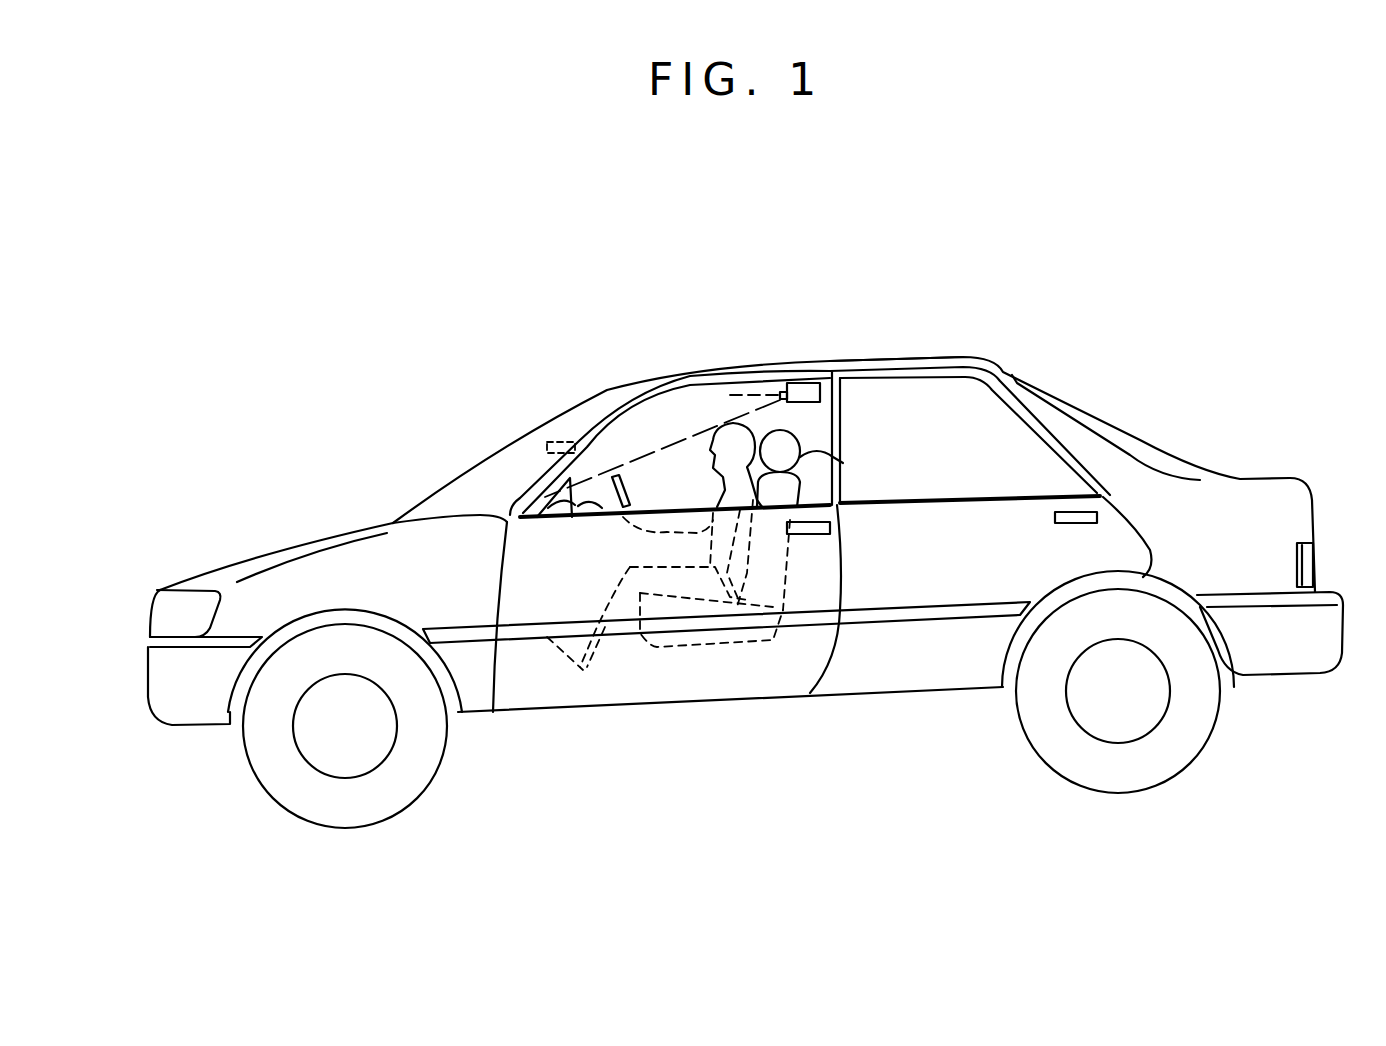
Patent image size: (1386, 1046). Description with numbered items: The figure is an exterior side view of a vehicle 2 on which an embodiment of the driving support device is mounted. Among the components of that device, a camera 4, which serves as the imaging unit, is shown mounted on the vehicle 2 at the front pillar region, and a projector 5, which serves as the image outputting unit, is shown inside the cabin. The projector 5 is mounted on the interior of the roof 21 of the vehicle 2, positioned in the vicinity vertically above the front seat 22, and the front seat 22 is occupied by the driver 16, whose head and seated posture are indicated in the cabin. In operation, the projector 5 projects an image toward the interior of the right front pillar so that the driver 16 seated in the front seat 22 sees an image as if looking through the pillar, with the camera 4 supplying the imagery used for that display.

The vehicle 2 is at (1250, 497).
The camera 4 is at (565, 440).
The projector 5 is at (797, 380).
The driver 16 is at (733, 423).
The roof 21 is at (900, 357).
The front seat 22 is at (840, 465).